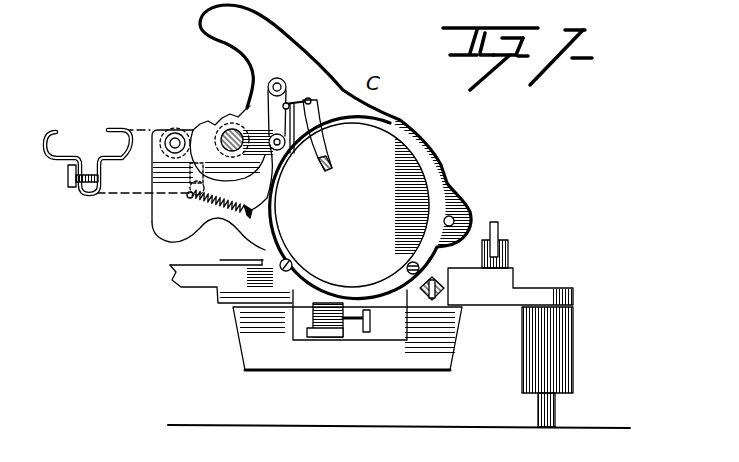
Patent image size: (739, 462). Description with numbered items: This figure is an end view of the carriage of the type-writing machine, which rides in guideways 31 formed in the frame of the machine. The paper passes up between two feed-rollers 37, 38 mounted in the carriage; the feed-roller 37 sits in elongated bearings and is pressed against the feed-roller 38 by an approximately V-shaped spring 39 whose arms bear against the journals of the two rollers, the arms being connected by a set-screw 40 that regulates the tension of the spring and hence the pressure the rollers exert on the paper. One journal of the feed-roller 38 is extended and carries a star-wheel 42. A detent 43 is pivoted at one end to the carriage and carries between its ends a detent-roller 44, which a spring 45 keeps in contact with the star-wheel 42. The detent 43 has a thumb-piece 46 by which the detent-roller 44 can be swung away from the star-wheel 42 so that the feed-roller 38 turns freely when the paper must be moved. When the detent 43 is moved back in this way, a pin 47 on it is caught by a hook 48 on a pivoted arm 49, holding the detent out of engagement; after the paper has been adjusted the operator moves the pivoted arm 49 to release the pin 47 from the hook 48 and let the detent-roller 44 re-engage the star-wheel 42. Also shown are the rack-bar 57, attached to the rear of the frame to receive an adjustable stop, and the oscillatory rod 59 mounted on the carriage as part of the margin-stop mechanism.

The guideways 31 is at (262, 290).
The feed-roller 37 is at (180, 125).
The feed-roller 38 is at (228, 113).
The spring 39 is at (124, 162).
The set-screw 40 is at (68, 180).
The star-wheel 42 is at (247, 103).
The detent 43 is at (285, 178).
The detent-roller 44 is at (275, 133).
The spring 45 is at (208, 208).
The thumb-piece 46 is at (256, 221).
The pin 47 is at (298, 128).
The hook 48 is at (299, 92).
The pivoted arm 49 is at (316, 114).
The rack-bar 57 is at (500, 229).
The oscillatory rod 59 is at (461, 213).